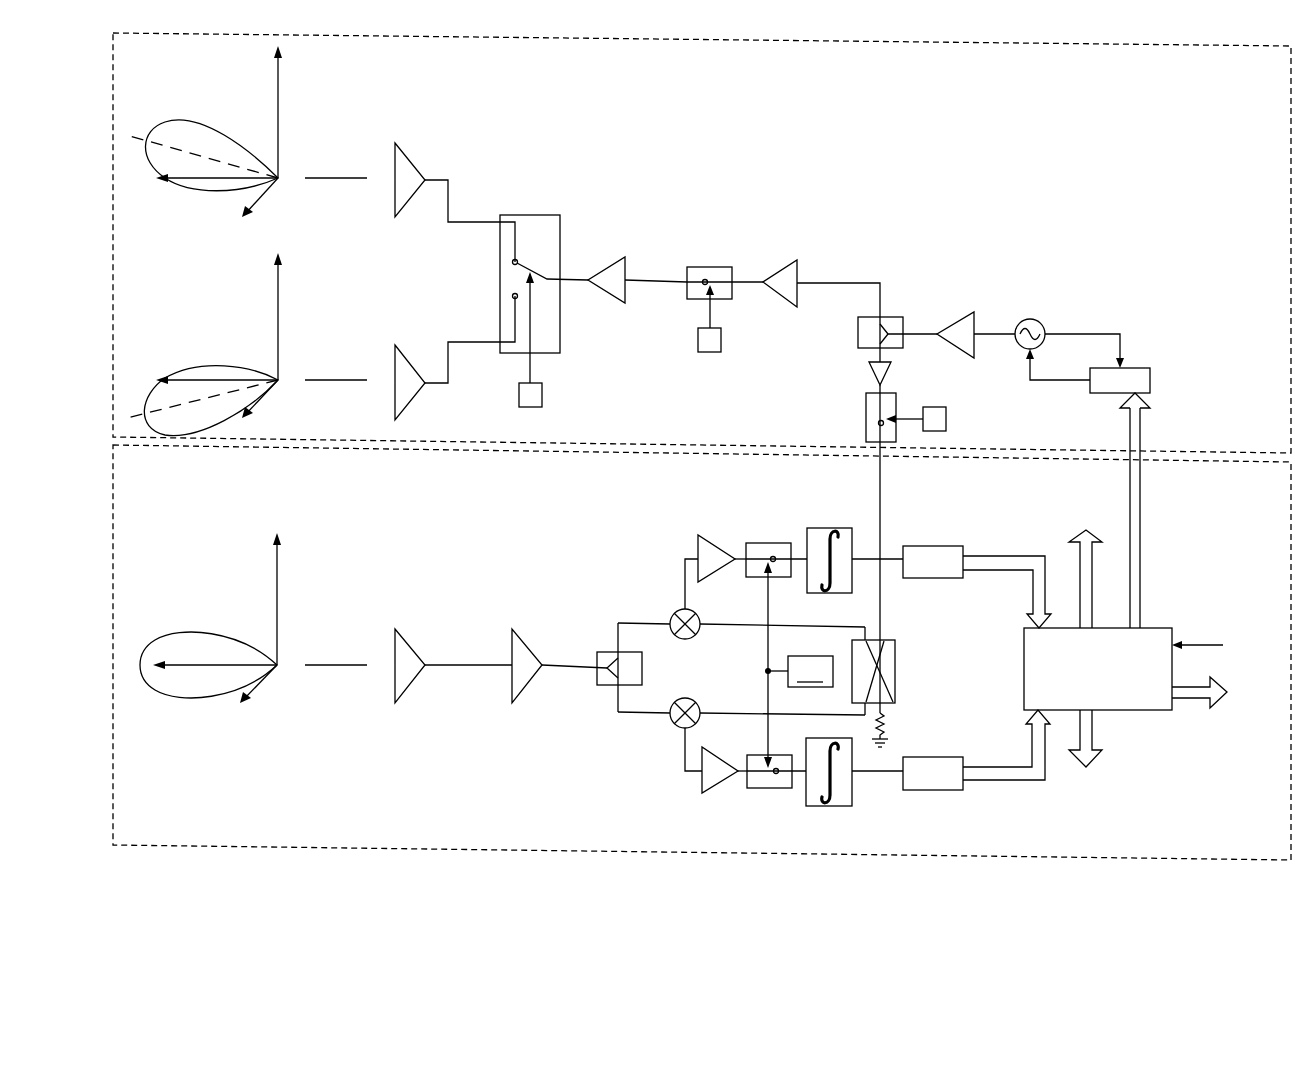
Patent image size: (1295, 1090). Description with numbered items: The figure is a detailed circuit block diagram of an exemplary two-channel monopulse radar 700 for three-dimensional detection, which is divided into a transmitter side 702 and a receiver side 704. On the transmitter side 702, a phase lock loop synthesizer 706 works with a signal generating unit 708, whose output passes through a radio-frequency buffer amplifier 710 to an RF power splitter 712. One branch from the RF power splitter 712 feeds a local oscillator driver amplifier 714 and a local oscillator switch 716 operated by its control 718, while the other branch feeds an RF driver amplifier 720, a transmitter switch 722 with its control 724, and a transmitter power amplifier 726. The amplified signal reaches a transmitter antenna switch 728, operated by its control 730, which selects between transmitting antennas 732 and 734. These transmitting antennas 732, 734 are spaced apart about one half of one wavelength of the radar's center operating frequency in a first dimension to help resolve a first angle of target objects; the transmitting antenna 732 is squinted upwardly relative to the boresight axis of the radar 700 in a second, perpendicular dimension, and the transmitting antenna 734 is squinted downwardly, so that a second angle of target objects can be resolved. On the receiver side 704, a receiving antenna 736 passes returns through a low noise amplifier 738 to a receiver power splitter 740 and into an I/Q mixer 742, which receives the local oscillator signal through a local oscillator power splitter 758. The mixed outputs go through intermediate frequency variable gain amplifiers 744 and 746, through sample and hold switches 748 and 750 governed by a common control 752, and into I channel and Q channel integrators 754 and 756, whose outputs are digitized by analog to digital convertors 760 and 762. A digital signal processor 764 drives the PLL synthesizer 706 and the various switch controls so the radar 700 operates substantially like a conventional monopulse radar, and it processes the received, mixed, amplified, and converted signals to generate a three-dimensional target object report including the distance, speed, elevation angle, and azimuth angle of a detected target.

The two-channel monopulse radar 700 is at (1248, 885).
The transmitter side 702 is at (1248, 442).
The receiver side 704 is at (1248, 855).
The phase lock loop (PLL) synthesizer 706 is at (1152, 378).
The signal generating unit 708 is at (1033, 318).
The radio-frequency (RF) buffer amplifier 710 is at (962, 318).
The RF power splitter 712 is at (895, 318).
The local oscillator driver amplifier 714 is at (893, 369).
The local oscillator switch 716 is at (866, 412).
The local oscillator switch control 718 is at (947, 420).
The RF driver amplifier 720 is at (778, 272).
The transmitter switch 722 is at (709, 267).
The transmitter switch control 724 is at (722, 345).
The transmitter power amplifier 726 is at (605, 268).
The transmitter antenna switch 728 is at (545, 213).
The transmitter antenna switch control 730 is at (543, 395).
The transmitting antenna 732 is at (410, 158).
The transmitting antenna 734 is at (412, 393).
The receiving antenna 736 is at (418, 680).
The low noise amplifier 738 is at (535, 682).
The receiver power splitter 740 is at (600, 652).
The I/Q mixer 742 is at (698, 632).
The intermediate frequency variable gain amplifier 744 is at (695, 545).
The intermediate frequency variable gain amplifier 746 is at (697, 785).
The sample and hold switch 748 is at (768, 543).
The sample and hold switch 750 is at (765, 790).
The sample and hold switch control 752 is at (798, 665).
The I channel integrator 754 is at (832, 528).
The Q channel integrator 756 is at (832, 806).
The local oscillator power splitter 758 is at (896, 690).
The analog to digital convertor 760 is at (948, 578).
The analog to digital convertor 762 is at (953, 755).
The digital signal processor 764 is at (1161, 628).